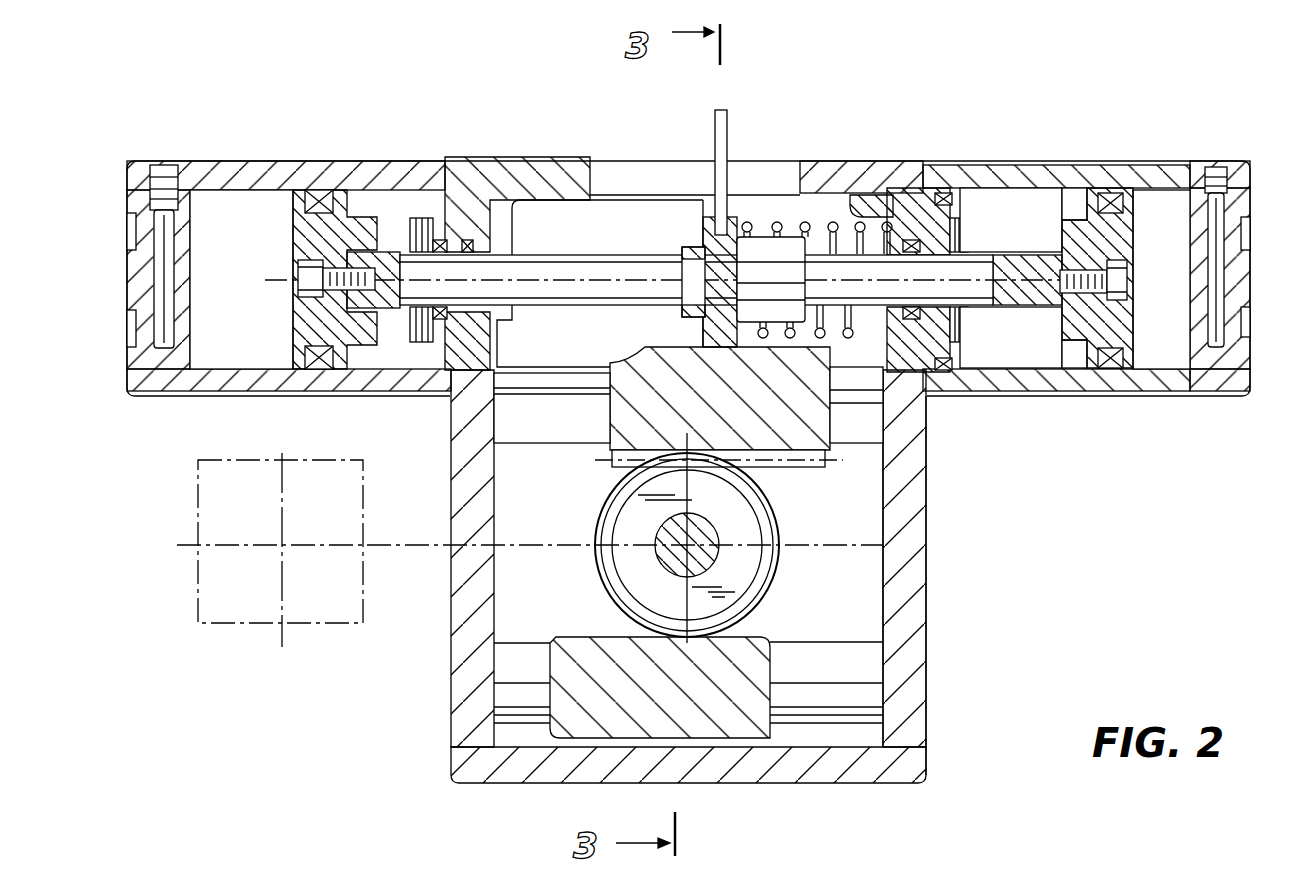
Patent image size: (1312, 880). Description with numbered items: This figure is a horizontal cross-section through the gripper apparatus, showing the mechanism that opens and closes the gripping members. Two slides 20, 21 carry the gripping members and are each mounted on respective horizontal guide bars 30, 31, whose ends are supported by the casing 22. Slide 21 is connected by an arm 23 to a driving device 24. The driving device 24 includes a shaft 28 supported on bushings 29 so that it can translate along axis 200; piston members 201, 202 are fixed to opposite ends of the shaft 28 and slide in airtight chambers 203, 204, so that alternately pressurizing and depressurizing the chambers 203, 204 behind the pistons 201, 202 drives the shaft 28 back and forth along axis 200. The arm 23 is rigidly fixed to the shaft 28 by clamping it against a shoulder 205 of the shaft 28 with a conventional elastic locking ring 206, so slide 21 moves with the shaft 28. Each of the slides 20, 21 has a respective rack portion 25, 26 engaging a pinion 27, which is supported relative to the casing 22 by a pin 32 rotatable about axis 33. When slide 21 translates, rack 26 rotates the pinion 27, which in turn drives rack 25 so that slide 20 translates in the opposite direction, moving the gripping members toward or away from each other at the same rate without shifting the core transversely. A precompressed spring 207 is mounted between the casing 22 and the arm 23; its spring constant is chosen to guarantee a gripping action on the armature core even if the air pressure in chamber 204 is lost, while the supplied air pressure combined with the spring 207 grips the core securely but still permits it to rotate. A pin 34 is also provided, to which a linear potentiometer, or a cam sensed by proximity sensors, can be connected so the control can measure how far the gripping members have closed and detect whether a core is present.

The slide 20 is at (565, 742).
The slide 21 is at (802, 437).
The casing 22 is at (917, 513).
The arm 23 is at (723, 342).
The driving device 24 is at (1262, 313).
The rack portion 25 is at (765, 630).
The rack portion 26 is at (608, 470).
The pinion 27 is at (752, 533).
The shaft 28 is at (580, 240).
The bushings 29 is at (467, 197).
The horizontal guide bar 30 is at (537, 680).
The horizontal guide bar 31 is at (517, 402).
The pin 32 is at (702, 560).
The axis 33 is at (732, 513).
The pin 34 is at (713, 140).
The axis 200 is at (597, 283).
The piston member 201 is at (307, 240).
The piston member 202 is at (1123, 243).
The airtight chamber 203 is at (223, 353).
The airtight chamber 204 is at (1150, 360).
The shoulder 205 is at (765, 215).
The elastic locking ring 206 is at (697, 237).
The precompressed spring 207 is at (833, 217).